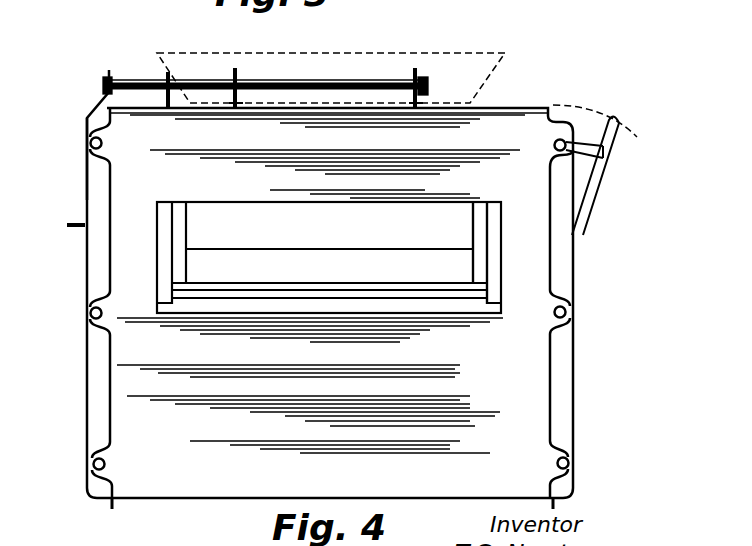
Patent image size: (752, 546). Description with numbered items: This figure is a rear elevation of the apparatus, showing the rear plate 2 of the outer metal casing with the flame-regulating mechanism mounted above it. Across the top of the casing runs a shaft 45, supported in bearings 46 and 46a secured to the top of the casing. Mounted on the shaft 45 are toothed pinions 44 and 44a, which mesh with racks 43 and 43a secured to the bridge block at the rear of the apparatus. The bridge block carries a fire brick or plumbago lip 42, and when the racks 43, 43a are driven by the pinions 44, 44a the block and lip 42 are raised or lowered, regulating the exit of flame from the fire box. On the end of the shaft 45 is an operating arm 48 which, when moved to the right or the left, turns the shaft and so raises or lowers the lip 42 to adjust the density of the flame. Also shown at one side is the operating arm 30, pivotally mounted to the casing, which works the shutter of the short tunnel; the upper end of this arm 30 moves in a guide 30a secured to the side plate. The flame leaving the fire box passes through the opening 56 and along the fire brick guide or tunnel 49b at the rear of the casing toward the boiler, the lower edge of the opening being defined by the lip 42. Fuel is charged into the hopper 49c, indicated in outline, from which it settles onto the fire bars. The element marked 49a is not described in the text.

The rear plate 2 is at (320, 289).
The operating arm 30 is at (588, 180).
The guide 30a is at (604, 153).
The fire brick or plumbago lip 42 is at (329, 257).
The rack 43 is at (418, 100).
The rack 43a is at (237, 100).
The toothed pinion 44 is at (417, 70).
The toothed pinion 44a is at (240, 74).
The shaft 45 is at (322, 82).
The bearing 46 is at (429, 92).
The bearing 46a is at (167, 74).
The operating arm 48 is at (87, 147).
The panel lower rail 49a is at (338, 302).
The fire brick guide or tunnel 49b is at (498, 240).
The hopper 49c is at (497, 62).
The opening 56 is at (329, 266).